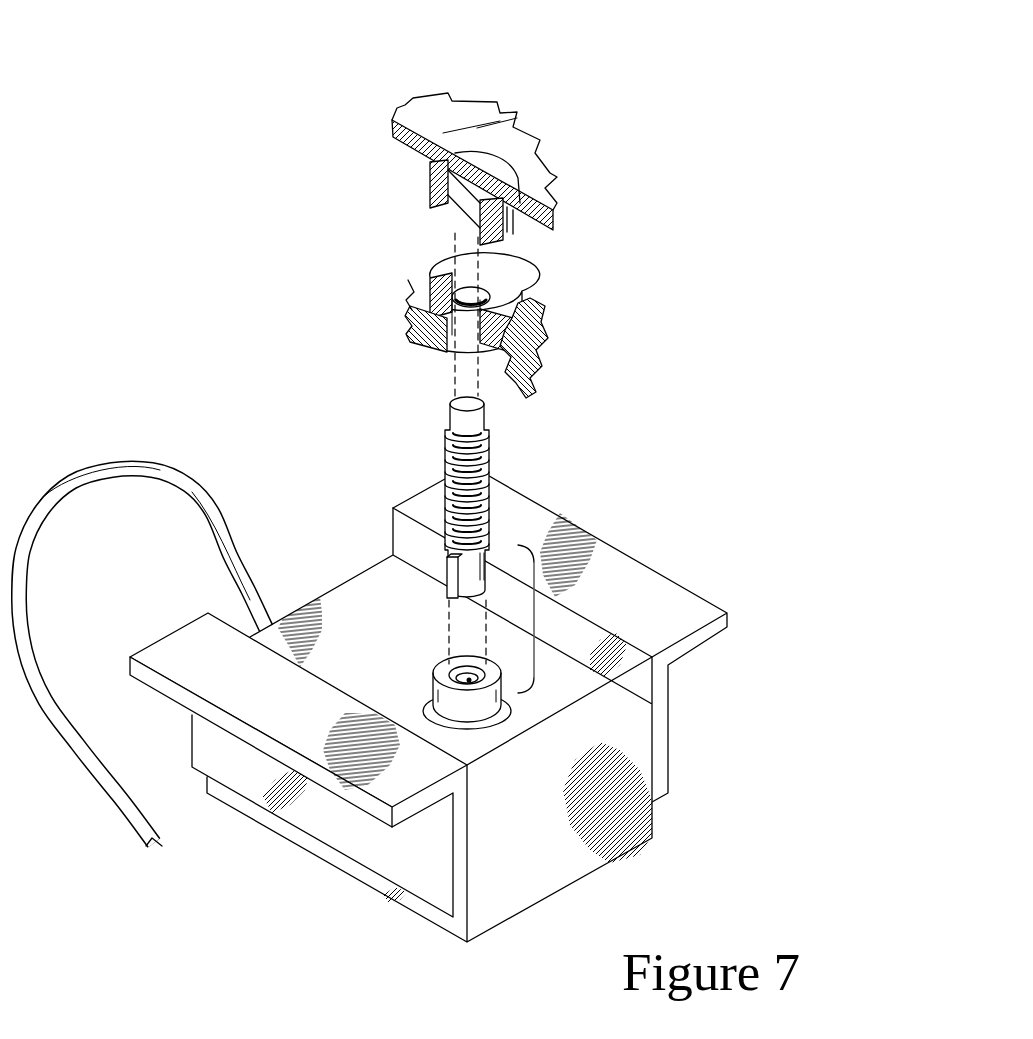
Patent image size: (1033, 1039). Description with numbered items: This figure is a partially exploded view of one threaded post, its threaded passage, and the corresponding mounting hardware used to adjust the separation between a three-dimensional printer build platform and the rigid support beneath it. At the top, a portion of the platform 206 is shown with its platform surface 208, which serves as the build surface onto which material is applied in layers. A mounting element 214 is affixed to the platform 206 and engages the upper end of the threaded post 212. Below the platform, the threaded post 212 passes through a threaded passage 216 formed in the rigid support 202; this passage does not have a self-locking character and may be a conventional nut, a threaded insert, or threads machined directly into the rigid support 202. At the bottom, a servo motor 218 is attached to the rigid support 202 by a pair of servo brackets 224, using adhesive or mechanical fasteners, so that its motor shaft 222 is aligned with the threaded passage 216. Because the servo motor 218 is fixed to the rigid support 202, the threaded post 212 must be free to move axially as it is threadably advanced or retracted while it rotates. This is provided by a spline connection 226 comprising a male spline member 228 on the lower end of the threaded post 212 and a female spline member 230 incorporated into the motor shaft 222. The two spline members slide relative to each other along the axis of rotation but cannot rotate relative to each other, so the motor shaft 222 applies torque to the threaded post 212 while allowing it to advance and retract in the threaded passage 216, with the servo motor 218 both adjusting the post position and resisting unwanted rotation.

The rigid support 202 is at (541, 321).
The platform 206 is at (507, 146).
The platform surface 208 is at (433, 124).
The threaded post 212 is at (496, 449).
The mounting element 214 is at (431, 187).
The threaded passage 216 is at (478, 296).
The servo motor 218 is at (690, 814).
The motor shaft 222 is at (430, 663).
The servo bracket 224 is at (183, 662).
The spline connection 226 is at (535, 620).
The male spline member 228 is at (452, 570).
The female spline member 230 is at (469, 681).